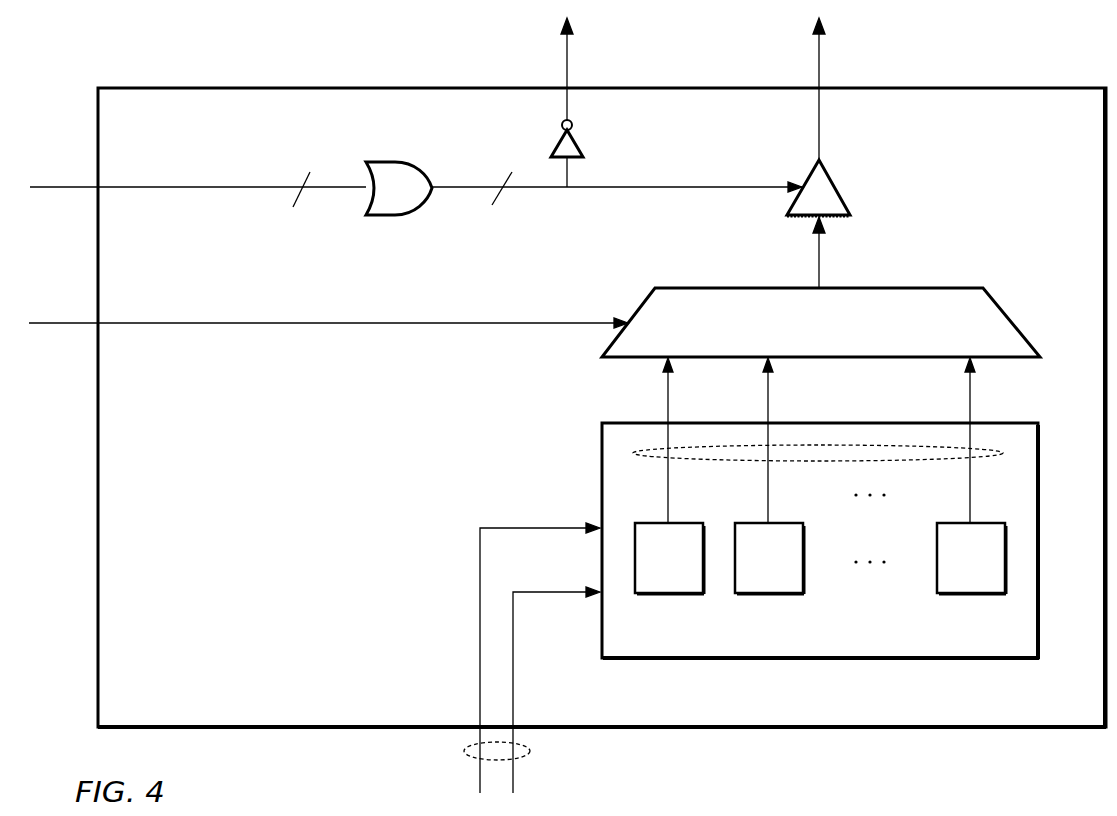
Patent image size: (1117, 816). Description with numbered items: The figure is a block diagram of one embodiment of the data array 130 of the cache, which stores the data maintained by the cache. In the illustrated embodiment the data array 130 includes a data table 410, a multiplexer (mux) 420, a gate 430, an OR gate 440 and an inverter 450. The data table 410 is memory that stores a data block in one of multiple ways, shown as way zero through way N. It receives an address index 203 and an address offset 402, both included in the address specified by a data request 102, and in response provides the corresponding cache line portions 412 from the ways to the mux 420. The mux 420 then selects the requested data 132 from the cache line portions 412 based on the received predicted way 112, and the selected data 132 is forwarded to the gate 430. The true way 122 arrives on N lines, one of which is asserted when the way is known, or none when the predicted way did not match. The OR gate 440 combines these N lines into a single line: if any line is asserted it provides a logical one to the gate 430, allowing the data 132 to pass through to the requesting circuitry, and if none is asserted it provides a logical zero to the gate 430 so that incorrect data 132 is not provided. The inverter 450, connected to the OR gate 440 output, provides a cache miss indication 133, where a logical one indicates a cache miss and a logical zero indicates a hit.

The data request 102 is at (531, 750).
The predicted way 112 is at (300, 325).
The true way 122 is at (199, 190).
The data array 130 is at (200, 706).
The data 132 is at (819, 55).
The cache miss indication 133 is at (567, 55).
The address index 203 is at (480, 692).
The address offset 402 is at (513, 690).
The data table 410 is at (1017, 651).
The cache line portions 412 is at (645, 458).
The multiplexer 420 is at (1005, 349).
The gate 430 is at (845, 183).
The OR gate 440 is at (386, 217).
The inverter 450 is at (583, 145).